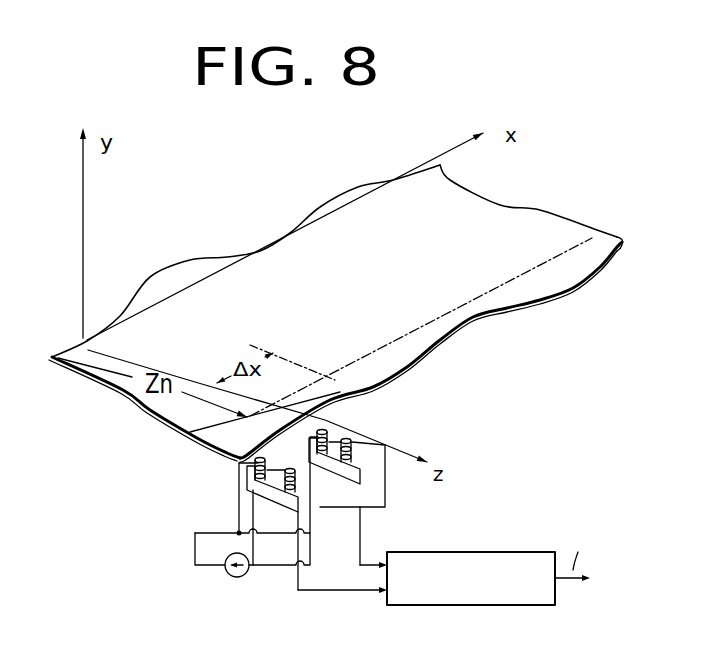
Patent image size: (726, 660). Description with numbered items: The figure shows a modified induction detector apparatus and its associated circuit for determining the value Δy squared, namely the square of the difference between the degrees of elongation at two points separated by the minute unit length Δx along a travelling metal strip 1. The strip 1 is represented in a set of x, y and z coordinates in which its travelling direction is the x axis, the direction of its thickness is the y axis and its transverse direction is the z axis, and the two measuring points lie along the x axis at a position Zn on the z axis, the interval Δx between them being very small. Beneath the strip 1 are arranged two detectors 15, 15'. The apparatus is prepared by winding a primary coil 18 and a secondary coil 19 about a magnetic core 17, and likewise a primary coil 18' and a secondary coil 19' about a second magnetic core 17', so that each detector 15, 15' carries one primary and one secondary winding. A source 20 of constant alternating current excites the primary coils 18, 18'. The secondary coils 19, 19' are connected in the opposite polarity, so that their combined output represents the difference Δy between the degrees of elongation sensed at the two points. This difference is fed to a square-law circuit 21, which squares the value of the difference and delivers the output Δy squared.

The metal strip 1 is at (327, 230).
The induction detector 15 is at (272, 501).
The induction detector 15' is at (334, 474).
The magnetic core 17 is at (278, 446).
The magnetic core 17' is at (373, 427).
The primary coil 18 is at (237, 485).
The primary coil 18' is at (341, 423).
The secondary coil 19 is at (303, 507).
The secondary coil 19' is at (357, 467).
The source of constant alternating current 20 is at (244, 574).
The square-law circuit 21 is at (522, 598).